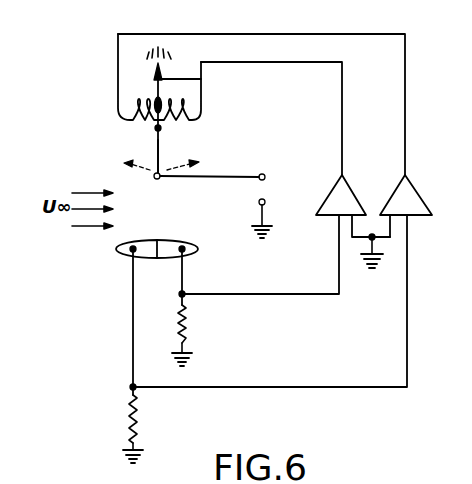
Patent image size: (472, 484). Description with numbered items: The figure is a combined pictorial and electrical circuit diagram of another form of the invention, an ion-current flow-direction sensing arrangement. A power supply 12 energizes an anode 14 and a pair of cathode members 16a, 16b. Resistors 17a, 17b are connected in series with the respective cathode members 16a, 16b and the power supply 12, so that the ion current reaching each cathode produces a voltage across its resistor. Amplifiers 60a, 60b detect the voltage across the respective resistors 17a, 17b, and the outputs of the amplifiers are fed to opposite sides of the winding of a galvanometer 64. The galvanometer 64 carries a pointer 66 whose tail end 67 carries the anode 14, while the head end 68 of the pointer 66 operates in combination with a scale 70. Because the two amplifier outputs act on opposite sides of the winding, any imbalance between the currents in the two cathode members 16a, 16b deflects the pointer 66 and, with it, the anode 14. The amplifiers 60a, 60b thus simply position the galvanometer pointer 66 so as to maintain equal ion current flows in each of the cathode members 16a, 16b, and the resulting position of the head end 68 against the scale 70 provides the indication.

The power supply 12 is at (268, 206).
The anode 14 is at (157, 180).
The cathode member 16a is at (125, 252).
The cathode member 16b is at (195, 253).
The resistor 17a is at (128, 420).
The resistor 17b is at (184, 332).
The amplifier 60a is at (414, 190).
The amplifier 60b is at (350, 195).
The galvanometer 64 is at (141, 135).
The pointer 66 is at (166, 141).
The tail end 67 is at (161, 158).
The head end 68 is at (201, 63).
The scale 70 is at (176, 54).